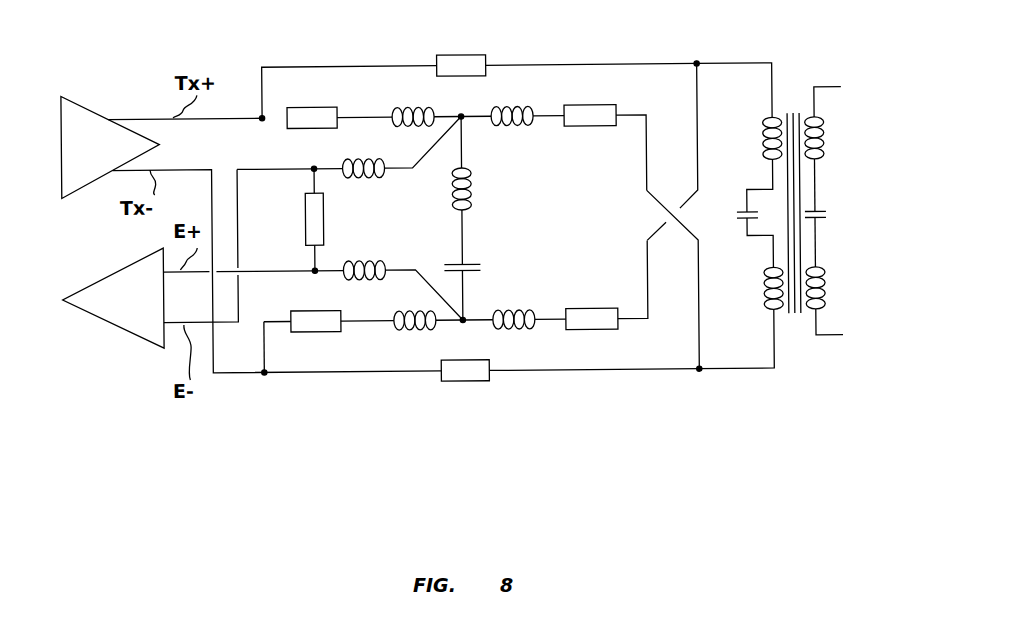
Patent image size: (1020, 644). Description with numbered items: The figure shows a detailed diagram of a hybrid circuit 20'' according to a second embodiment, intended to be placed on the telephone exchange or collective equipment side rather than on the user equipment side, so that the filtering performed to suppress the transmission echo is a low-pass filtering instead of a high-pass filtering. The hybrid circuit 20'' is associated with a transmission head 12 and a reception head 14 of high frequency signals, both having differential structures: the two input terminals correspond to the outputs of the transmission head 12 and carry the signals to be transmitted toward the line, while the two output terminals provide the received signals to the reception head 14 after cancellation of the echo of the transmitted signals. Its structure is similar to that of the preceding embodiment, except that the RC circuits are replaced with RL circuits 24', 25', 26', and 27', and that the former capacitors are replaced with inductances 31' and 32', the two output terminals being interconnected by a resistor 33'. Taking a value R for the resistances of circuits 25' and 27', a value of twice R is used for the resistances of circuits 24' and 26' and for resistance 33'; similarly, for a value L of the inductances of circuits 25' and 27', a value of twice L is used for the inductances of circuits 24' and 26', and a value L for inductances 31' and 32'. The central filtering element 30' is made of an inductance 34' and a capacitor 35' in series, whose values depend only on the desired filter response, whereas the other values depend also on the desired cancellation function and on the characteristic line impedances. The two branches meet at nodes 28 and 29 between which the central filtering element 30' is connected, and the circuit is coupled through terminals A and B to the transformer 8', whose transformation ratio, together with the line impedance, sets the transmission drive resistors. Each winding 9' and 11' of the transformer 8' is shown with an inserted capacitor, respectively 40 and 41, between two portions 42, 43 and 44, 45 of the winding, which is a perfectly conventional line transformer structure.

The transmission head 12 is at (81, 97).
The reception head 14 is at (102, 320).
The hybrid circuit 20'' is at (403, 253).
The RL circuit 24' is at (374, 102).
The RL circuit 25' is at (554, 133).
The RL circuit 26' is at (364, 330).
The RL circuit 27' is at (555, 305).
The upper circuit node 28 is at (463, 115).
The lower circuit node 29 is at (462, 322).
The central filtering element 30' is at (506, 218).
The inductance 31' is at (349, 173).
The inductance 32' is at (313, 274).
The resistor 33' is at (302, 220).
The inductance 34' is at (486, 188).
The capacitor 35' is at (497, 254).
The terminal A is at (698, 66).
The terminal B is at (698, 372).
The transformer 8' is at (812, 249).
The winding 11' is at (736, 216).
The winding 9' is at (845, 212).
The winding portion 44 is at (766, 138).
The winding portion 45 is at (765, 291).
The capacitor 41 is at (740, 210).
The winding portion 42 is at (825, 140).
The winding portion 43 is at (826, 288).
The capacitor 40 is at (820, 215).